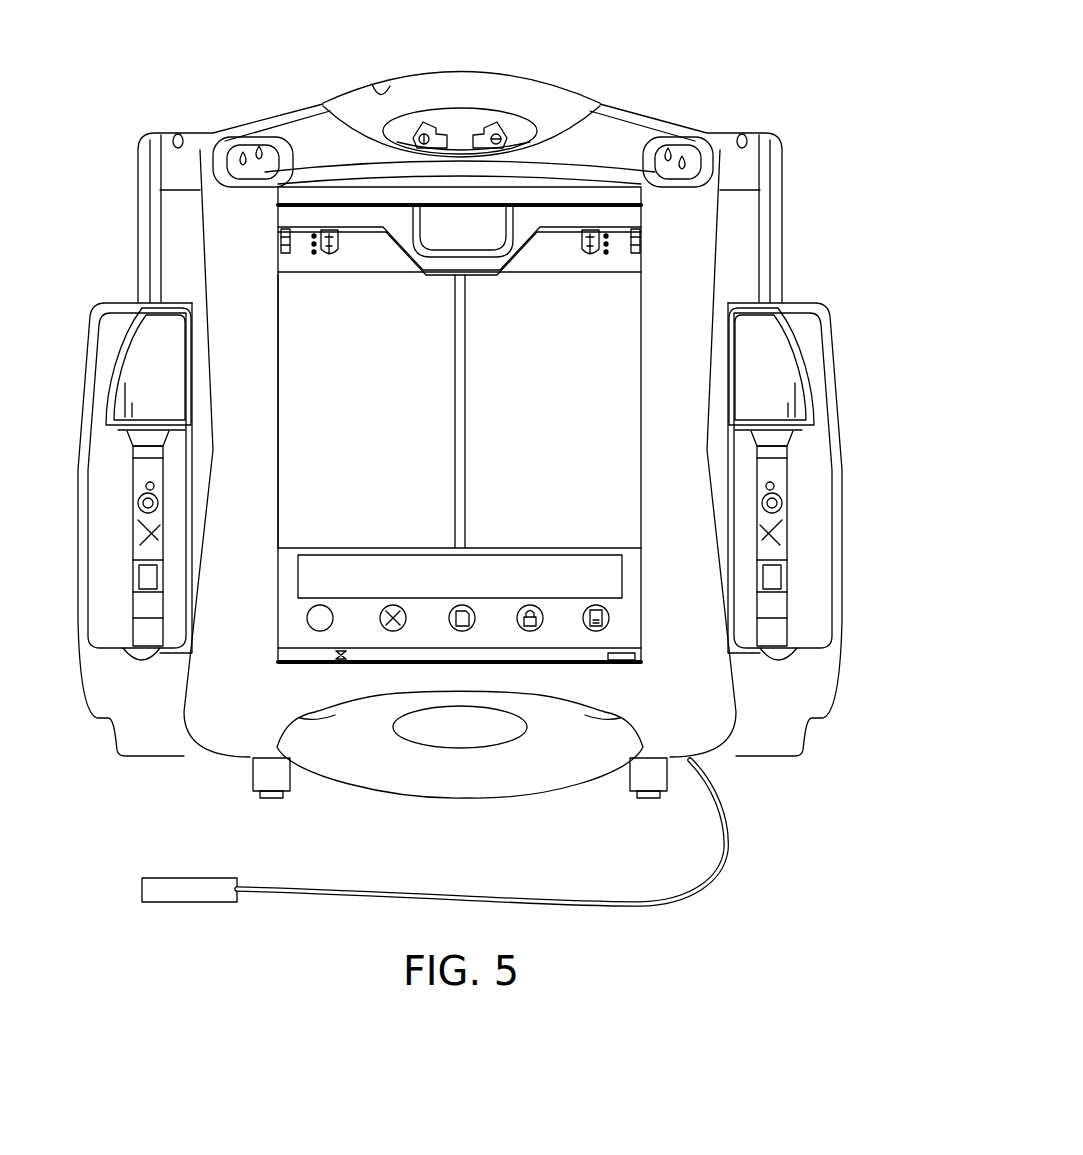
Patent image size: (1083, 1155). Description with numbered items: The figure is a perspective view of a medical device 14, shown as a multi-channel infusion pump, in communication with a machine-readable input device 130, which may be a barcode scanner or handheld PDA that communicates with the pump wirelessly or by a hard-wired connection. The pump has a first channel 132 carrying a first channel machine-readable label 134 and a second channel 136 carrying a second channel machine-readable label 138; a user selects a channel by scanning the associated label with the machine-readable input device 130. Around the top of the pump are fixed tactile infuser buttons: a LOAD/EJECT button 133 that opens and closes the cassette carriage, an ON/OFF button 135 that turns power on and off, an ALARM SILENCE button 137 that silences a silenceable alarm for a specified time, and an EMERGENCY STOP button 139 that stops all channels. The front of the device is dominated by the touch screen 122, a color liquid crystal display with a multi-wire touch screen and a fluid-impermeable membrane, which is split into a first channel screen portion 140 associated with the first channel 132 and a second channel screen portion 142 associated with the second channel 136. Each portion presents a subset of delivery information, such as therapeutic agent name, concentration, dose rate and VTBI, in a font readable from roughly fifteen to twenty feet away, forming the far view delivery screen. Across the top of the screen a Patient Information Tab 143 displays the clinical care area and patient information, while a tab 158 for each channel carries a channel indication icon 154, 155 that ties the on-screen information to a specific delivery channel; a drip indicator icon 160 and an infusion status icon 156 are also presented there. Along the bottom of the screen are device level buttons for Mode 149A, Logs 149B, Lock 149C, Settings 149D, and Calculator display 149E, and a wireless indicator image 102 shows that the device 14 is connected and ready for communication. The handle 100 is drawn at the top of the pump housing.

The medical device 14 is at (804, 60).
The handle 100 is at (379, 88).
The wireless indicator image 102 is at (338, 668).
The touch screen 122 is at (308, 393).
The machine-readable input device 130 is at (188, 877).
The first channel 132 is at (107, 523).
The LOAD/EJECT button 133 is at (228, 133).
The first channel machine-readable label 134 is at (280, 257).
The ON/OFF button 135 is at (432, 137).
The second channel 136 is at (810, 527).
The ALARM SILENCE button 137 is at (478, 78).
The second channel machine-readable label 138 is at (643, 240).
The EMERGENCY STOP button 139 is at (510, 127).
The first channel screen portion 140 is at (293, 528).
The second channel screen portion 142 is at (488, 517).
The Patient Information Tab 143 is at (430, 213).
The Mode button 149A is at (305, 619).
The Logs button 149B is at (452, 622).
The Lock button 149C is at (538, 622).
The Settings button 149D is at (378, 622).
The Calculator display button 149E is at (612, 619).
The channel indication icon 154 is at (242, 148).
The channel indication icon 155 is at (623, 230).
The infusion status icon 156 is at (313, 232).
The tab 158 is at (380, 230).
The drip indicator icon 160 is at (330, 228).